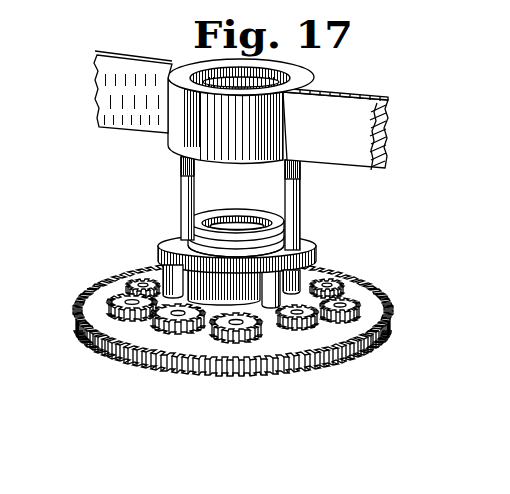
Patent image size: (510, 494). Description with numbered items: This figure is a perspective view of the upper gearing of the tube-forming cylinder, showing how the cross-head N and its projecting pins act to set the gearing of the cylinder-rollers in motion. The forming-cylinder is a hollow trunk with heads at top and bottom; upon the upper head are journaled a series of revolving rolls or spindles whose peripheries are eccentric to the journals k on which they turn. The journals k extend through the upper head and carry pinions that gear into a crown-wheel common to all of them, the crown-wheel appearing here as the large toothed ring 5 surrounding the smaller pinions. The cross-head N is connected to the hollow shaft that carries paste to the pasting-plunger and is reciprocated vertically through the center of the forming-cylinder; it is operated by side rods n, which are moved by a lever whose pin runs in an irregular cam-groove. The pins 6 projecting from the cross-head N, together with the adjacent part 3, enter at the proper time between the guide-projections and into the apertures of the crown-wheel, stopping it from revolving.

The cross-head N is at (241, 110).
The nut 6 is at (246, 186).
The side rods n is at (236, 227).
The pinion shaft 3 is at (271, 286).
The journals k is at (243, 299).
The ring gear 5 is at (308, 372).